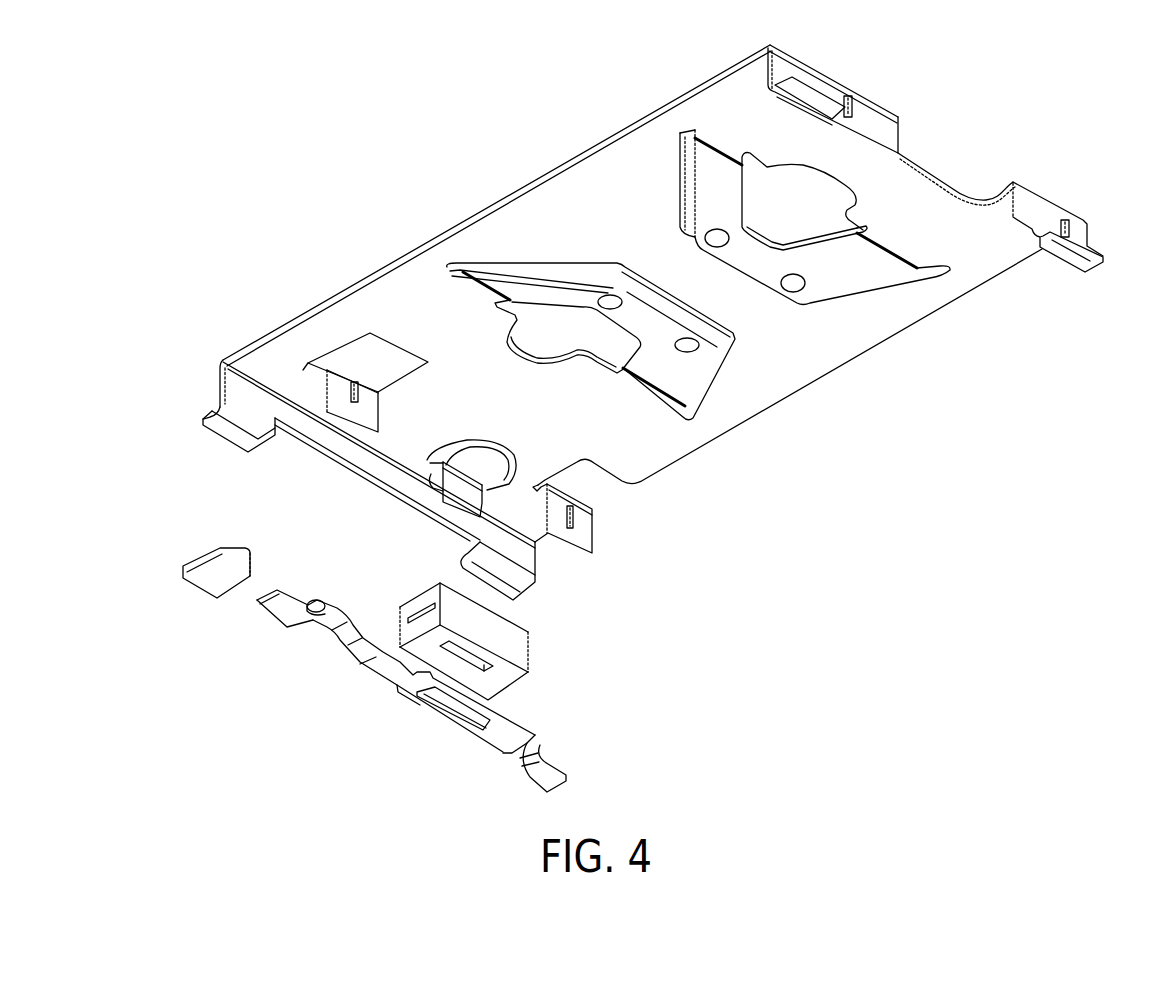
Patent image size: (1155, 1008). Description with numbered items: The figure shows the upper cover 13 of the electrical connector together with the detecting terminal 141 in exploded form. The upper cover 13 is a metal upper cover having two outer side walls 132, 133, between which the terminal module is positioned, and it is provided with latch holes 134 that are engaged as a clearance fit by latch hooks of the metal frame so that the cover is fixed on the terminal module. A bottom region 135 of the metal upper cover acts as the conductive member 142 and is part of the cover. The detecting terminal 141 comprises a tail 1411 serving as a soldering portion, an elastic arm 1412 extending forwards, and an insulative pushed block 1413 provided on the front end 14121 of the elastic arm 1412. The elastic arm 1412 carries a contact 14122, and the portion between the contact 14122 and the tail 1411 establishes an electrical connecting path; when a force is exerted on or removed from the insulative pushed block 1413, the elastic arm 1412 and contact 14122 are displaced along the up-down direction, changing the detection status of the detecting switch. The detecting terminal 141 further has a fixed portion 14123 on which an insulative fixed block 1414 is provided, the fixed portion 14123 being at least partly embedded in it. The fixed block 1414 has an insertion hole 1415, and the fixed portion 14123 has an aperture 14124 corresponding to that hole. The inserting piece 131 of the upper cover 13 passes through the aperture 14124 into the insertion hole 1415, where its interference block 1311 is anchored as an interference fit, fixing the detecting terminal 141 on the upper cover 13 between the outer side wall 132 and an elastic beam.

The upper cover 13 is at (649, 322).
The inserting piece 131 is at (445, 505).
The interference block 1311 is at (435, 489).
The outer side wall 132 is at (324, 438).
The outer side wall 133 is at (885, 128).
The latch hole 134 is at (860, 96).
The bottom region 135 is at (280, 380).
The conductive member 142 is at (309, 355).
The detecting terminal 141 is at (359, 647).
The tail 1411 is at (534, 783).
The elastic arm 1412 is at (391, 681).
The front end 14121 is at (248, 613).
The contact 14122 is at (319, 598).
The fixed portion 14123 is at (439, 712).
The aperture 14124 is at (537, 737).
The insulative pushed block 1413 is at (193, 588).
The fixed block 1414 is at (506, 641).
The insertion hole 1415 is at (492, 665).